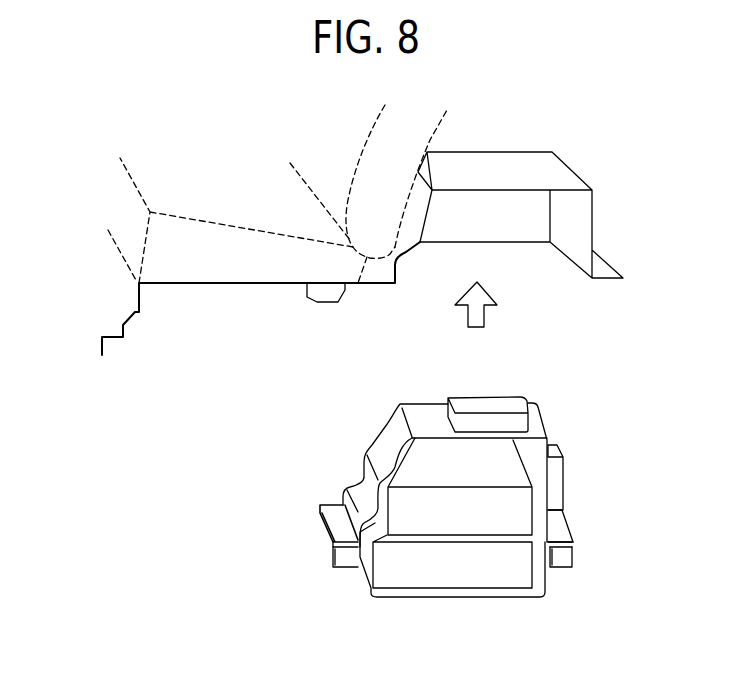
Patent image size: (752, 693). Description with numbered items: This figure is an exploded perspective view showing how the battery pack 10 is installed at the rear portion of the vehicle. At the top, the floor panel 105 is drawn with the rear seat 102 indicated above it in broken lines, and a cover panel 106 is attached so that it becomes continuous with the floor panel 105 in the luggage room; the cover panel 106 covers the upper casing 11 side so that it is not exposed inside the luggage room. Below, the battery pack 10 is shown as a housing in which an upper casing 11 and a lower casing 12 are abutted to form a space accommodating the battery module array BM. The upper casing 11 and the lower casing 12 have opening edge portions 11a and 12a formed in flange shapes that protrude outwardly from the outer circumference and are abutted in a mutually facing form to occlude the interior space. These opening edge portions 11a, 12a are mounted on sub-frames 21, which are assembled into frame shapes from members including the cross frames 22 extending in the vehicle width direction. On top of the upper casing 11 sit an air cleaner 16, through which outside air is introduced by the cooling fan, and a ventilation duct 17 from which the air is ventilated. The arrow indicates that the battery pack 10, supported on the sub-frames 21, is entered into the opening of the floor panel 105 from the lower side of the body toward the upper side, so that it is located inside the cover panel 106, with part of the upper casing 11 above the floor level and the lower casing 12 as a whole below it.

The battery pack 10 is at (622, 363).
The upper casing 11 is at (385, 432).
The opening edge portion 11a is at (318, 512).
The lower casing 12 is at (363, 590).
The opening edge portion 12a is at (453, 544).
The air cleaner 16 is at (496, 397).
The ventilation duct 17 is at (557, 480).
The sub-frame 21 is at (328, 548).
The cross frame 22 is at (443, 557).
The battery module array BM is at (467, 560).
The rear seat 102 is at (367, 143).
The floor panel 105 is at (228, 283).
The cover panel 106 is at (522, 163).